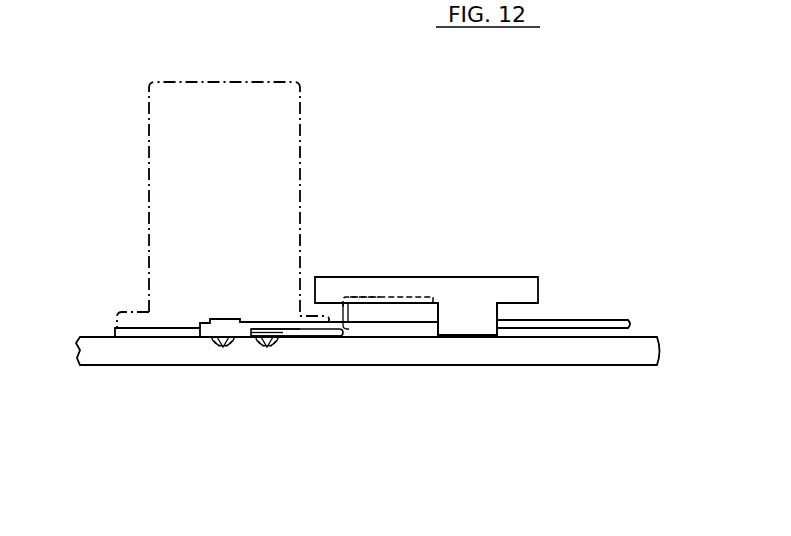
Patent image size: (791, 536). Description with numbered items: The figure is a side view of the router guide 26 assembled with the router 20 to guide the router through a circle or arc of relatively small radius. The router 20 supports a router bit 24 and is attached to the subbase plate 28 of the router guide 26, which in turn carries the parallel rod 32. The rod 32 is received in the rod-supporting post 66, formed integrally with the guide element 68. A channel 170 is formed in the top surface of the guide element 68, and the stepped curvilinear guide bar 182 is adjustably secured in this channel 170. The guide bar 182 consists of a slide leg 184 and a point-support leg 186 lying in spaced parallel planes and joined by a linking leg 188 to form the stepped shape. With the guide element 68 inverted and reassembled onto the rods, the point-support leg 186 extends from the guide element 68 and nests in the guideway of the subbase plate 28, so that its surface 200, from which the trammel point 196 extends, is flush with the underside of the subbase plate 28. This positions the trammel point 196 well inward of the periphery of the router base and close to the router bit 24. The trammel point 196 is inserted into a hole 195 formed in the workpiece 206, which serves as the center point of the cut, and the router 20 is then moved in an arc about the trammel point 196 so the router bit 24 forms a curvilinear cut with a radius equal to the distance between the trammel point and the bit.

The router 20 is at (304, 162).
The router bit 24 is at (213, 355).
The router guide 26 is at (509, 270).
The subbase plate 28 is at (113, 326).
The rod 32 is at (610, 319).
The rod-supporting post 66 is at (467, 345).
The guide element 68 is at (424, 274).
The channel 170 is at (365, 298).
The curvilinear guide bar 182 is at (306, 346).
The slide leg 184 is at (398, 300).
The point-support leg 186 is at (283, 340).
The linking leg 188 is at (348, 314).
The hole 195 is at (268, 329).
The trammel point 196 is at (265, 353).
The surface 200 is at (291, 340).
The workpiece 206 is at (105, 350).